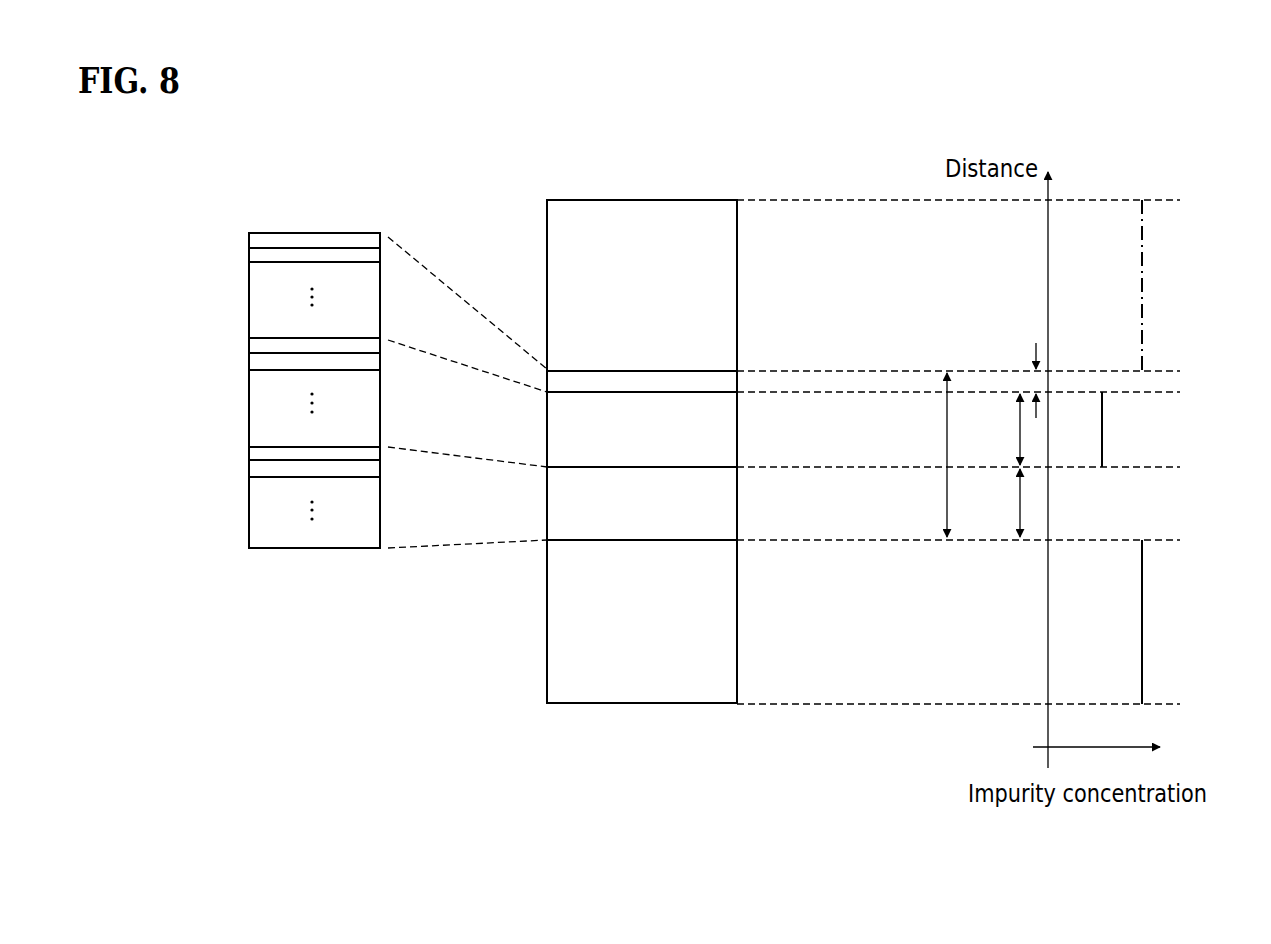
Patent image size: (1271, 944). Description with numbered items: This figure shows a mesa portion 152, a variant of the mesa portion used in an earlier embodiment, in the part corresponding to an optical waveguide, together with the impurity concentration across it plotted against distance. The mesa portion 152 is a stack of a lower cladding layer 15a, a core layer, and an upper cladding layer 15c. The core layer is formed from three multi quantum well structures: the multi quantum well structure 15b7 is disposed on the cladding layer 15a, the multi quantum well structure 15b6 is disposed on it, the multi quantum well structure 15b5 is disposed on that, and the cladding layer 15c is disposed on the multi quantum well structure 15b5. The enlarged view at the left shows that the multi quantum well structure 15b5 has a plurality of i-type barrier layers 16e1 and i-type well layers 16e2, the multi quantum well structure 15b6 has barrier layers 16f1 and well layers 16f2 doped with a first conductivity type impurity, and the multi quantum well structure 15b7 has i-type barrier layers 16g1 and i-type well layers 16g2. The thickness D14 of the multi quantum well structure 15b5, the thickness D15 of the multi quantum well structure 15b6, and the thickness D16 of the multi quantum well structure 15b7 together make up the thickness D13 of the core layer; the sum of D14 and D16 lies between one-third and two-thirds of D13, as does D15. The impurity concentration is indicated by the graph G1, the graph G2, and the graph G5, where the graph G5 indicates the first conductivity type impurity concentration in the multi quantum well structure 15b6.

The mesa portion 152 is at (612, 184).
The cladding layer 15c is at (555, 227).
The cladding layer 15a is at (555, 640).
The multi quantum well (MQW) structure 15b5 is at (383, 234).
The multi quantum well (MQW) structure 15b6 is at (383, 339).
The multi quantum well (MQW) structure 15b7 is at (383, 448).
The i-type barrier layers 16e1 is at (252, 240).
The i-type well layers 16e2 is at (252, 255).
The barrier layers doped with a first conductivity type impurity 16f1 is at (252, 346).
The well layers doped with a first conductivity type impurity 16f2 is at (252, 362).
The i-type barrier layers 16g1 is at (252, 454).
The i-type well layers 16g2 is at (252, 468).
The thickness of the core layer D13 is at (921, 455).
The thickness of the multi quantum well structure 15b5 D14 is at (1036, 380).
The thickness of the multi quantum well structure 15b6 D15 is at (993, 429).
The thickness of the multi quantum well structure 15b7 D16 is at (993, 503).
The graph G1 is at (1144, 277).
The graph G5 is at (1104, 425).
The graph G2 is at (1144, 627).